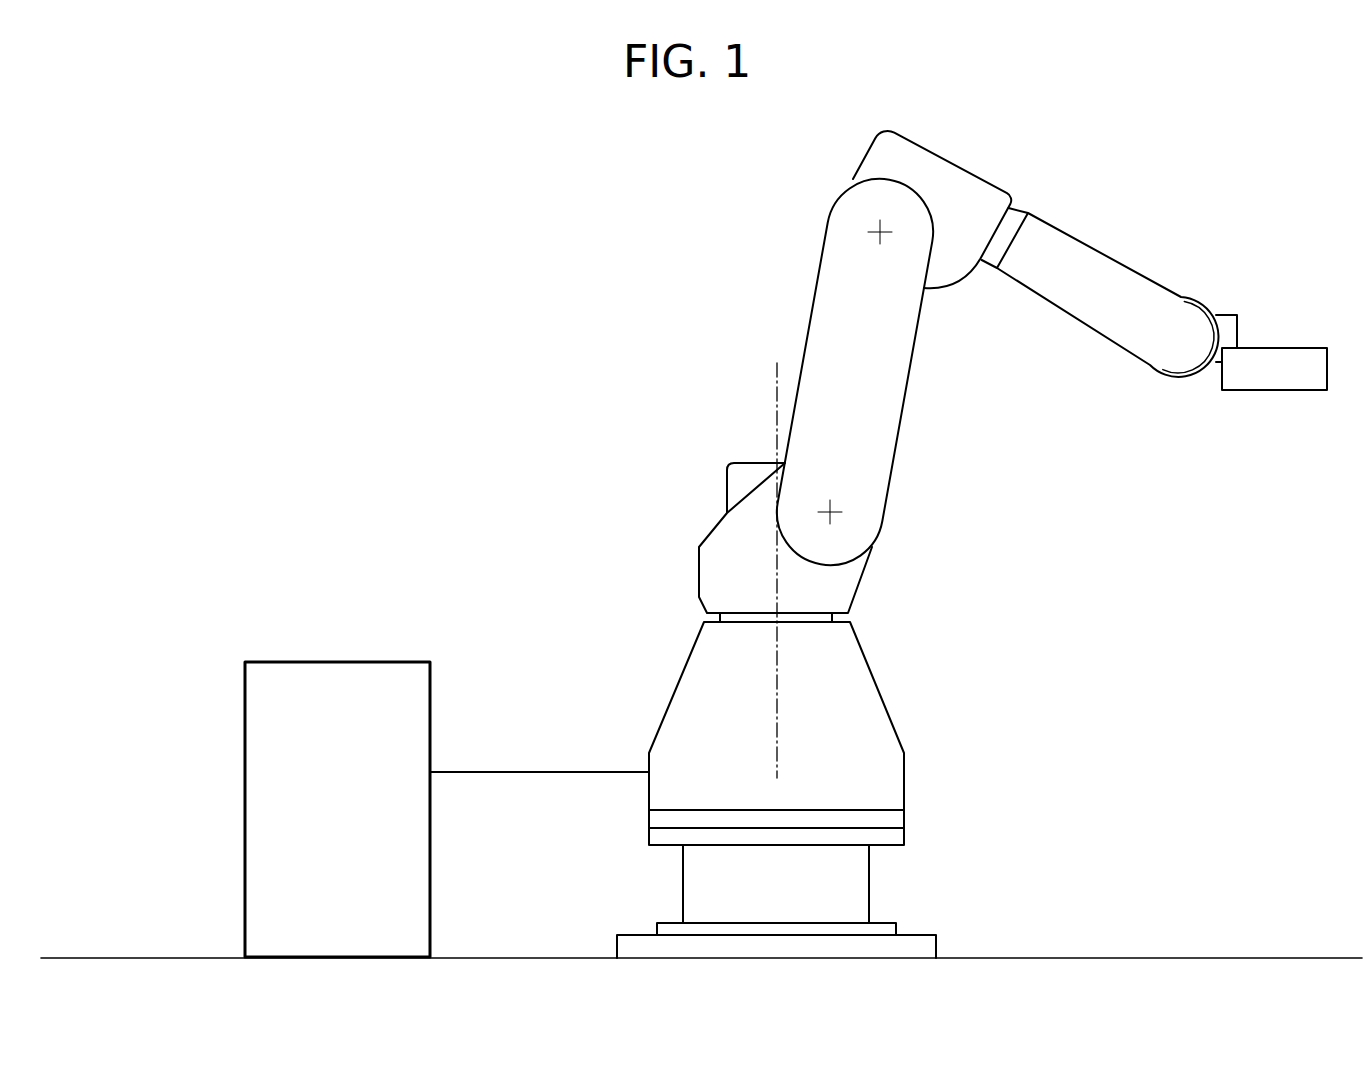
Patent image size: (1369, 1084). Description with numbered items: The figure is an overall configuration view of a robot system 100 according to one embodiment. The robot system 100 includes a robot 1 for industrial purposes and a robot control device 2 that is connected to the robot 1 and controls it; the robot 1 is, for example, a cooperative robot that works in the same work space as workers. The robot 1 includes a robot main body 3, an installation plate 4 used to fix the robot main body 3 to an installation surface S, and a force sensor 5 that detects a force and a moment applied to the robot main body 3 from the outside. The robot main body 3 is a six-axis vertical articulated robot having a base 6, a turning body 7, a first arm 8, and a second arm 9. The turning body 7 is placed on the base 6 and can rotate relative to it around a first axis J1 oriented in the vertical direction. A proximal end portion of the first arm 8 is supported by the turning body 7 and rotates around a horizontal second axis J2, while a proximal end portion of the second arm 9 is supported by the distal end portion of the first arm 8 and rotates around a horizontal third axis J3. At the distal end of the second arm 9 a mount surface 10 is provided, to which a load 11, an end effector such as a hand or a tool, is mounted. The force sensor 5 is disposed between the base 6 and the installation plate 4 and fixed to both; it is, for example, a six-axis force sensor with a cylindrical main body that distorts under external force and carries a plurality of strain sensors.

The robot system 100 is at (405, 150).
The robot 1 is at (558, 340).
The robot control device 2 is at (337, 661).
The robot main body 3 is at (681, 425).
The installation plate 4 is at (936, 944).
The force sensor 5 is at (870, 880).
The base 6 is at (880, 685).
The turning body 7 is at (699, 566).
The first arm 8 is at (890, 394).
The second arm 9 is at (1082, 238).
The mount surface 10 is at (1224, 332).
The load 11 is at (1290, 348).
The first axis J1 is at (776, 556).
The second axis J2 is at (835, 505).
The third axis J3 is at (868, 232).
The installation surface S is at (1164, 958).